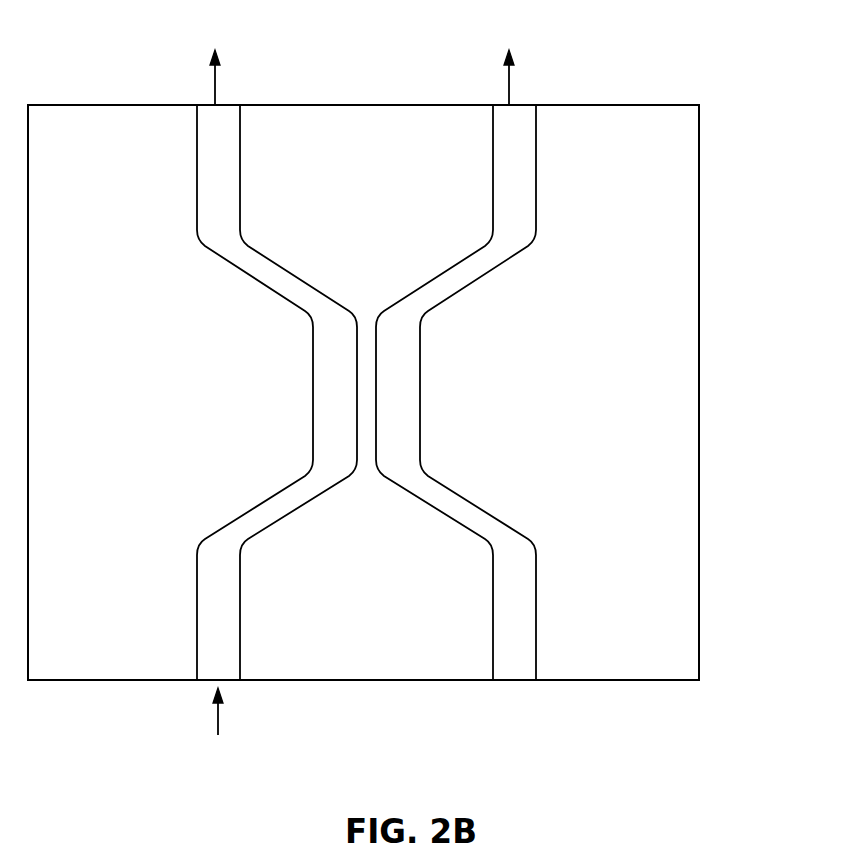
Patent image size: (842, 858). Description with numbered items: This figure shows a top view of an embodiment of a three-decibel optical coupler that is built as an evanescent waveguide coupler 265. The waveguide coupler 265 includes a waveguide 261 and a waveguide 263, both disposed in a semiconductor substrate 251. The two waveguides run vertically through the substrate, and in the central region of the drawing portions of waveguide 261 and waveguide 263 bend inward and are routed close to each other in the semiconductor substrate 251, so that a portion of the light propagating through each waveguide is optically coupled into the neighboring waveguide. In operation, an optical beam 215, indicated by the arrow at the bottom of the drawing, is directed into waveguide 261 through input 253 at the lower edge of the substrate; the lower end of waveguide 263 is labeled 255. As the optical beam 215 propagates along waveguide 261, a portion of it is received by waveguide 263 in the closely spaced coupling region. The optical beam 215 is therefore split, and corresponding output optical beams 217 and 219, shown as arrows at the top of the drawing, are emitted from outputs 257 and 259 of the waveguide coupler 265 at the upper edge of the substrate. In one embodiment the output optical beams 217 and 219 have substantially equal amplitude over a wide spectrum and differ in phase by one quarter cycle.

The semiconductor substrate 251 is at (690, 187).
The input 253 is at (207, 680).
The second inlet 255 is at (527, 680).
The output 257 is at (203, 103).
The output 259 is at (500, 103).
The waveguide 261 is at (198, 595).
The waveguide 263 is at (536, 583).
The evanescent waveguide coupler 265 is at (645, 102).
The optical beam 215 is at (225, 718).
The output optical beam 217 is at (226, 80).
The output optical beam 219 is at (522, 80).